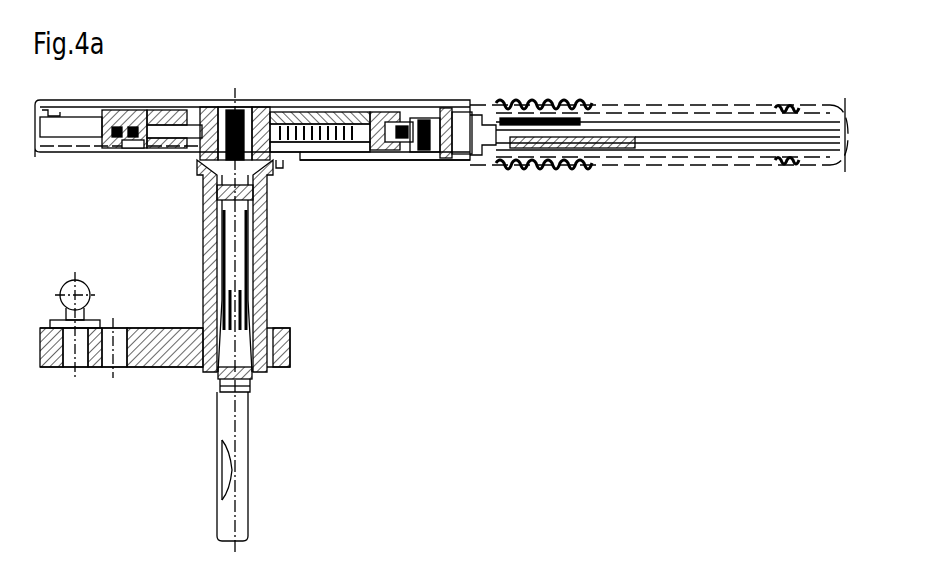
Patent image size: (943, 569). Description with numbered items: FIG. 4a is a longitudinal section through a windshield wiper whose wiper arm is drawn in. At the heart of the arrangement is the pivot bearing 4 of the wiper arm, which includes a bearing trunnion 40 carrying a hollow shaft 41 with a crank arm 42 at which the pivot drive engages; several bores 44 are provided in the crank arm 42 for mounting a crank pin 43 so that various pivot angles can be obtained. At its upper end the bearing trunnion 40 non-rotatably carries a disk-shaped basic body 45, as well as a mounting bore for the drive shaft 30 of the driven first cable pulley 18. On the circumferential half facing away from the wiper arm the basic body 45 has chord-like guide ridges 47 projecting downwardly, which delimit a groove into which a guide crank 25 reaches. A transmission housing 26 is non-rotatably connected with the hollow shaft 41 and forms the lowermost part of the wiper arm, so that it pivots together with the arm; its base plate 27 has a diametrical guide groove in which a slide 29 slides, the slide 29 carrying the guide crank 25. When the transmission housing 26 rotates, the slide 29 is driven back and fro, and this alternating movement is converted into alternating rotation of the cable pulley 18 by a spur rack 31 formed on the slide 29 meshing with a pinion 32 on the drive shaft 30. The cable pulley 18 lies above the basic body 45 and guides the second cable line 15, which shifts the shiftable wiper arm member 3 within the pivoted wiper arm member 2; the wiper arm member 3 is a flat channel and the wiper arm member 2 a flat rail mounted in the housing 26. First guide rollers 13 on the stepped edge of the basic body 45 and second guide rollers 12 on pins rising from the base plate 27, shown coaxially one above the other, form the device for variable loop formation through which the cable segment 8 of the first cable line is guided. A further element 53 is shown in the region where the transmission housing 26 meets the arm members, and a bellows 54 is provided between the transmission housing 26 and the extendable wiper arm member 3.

The pivoted wiper arm member 2 is at (517, 100).
The shiftable wiper arm member 3 is at (606, 146).
The pivot bearing 4 is at (268, 99).
The cable segment 8 is at (407, 116).
The second guide roller 12 is at (456, 118).
The first guide roller 13 is at (388, 120).
The second cable line 15 is at (581, 106).
The first cable pulley 18 is at (62, 108).
The guide crank 25 is at (120, 150).
The transmission housing 26 is at (161, 99).
The base plate 27 is at (150, 150).
The slide 29 is at (137, 150).
The drive shaft 30 is at (265, 176).
The spur rack 31 is at (290, 156).
The pinion 32 is at (289, 103).
The bearing trunnion 40 is at (228, 440).
The hollow shaft 41 is at (210, 325).
The crank arm 42 is at (148, 370).
The crank pin 43 is at (62, 370).
The bore 44 is at (108, 370).
The basic body 45 is at (184, 118).
The guide ridge 47 is at (110, 140).
The coupling 53 is at (481, 160).
The bellows 54 is at (553, 103).